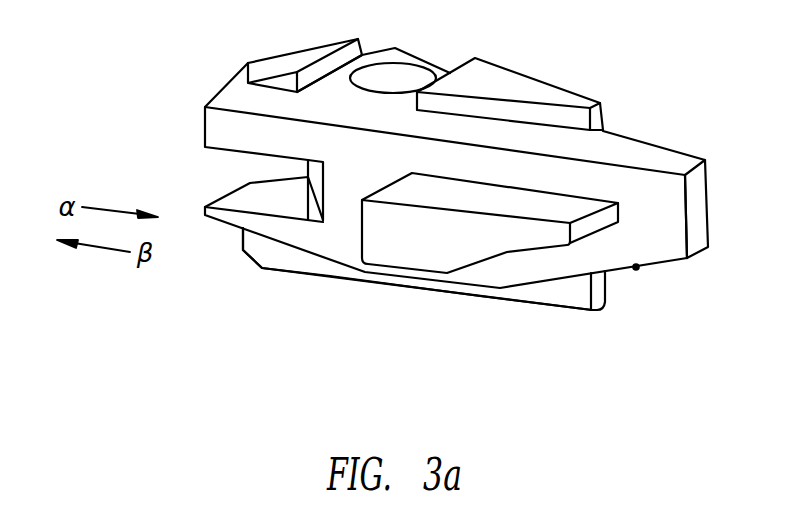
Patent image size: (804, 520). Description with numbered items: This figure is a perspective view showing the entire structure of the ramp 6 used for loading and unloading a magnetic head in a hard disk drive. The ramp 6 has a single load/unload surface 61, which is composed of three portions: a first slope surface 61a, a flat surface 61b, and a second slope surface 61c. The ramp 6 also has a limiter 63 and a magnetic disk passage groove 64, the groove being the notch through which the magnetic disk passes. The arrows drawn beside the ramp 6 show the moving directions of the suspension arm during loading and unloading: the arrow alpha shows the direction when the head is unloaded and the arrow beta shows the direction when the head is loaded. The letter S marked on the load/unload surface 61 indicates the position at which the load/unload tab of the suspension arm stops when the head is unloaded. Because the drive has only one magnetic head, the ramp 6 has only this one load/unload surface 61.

The ramp 6 is at (682, 132).
The load/unload surface 61 is at (424, 323).
The first slope surface 61a is at (317, 258).
The flat surface 61b is at (417, 282).
The second slope surface 61c is at (536, 321).
The limiter 63 is at (485, 232).
The magnetic disk passage groove 64 is at (249, 199).
The stop position of load/unload tab S is at (637, 269).